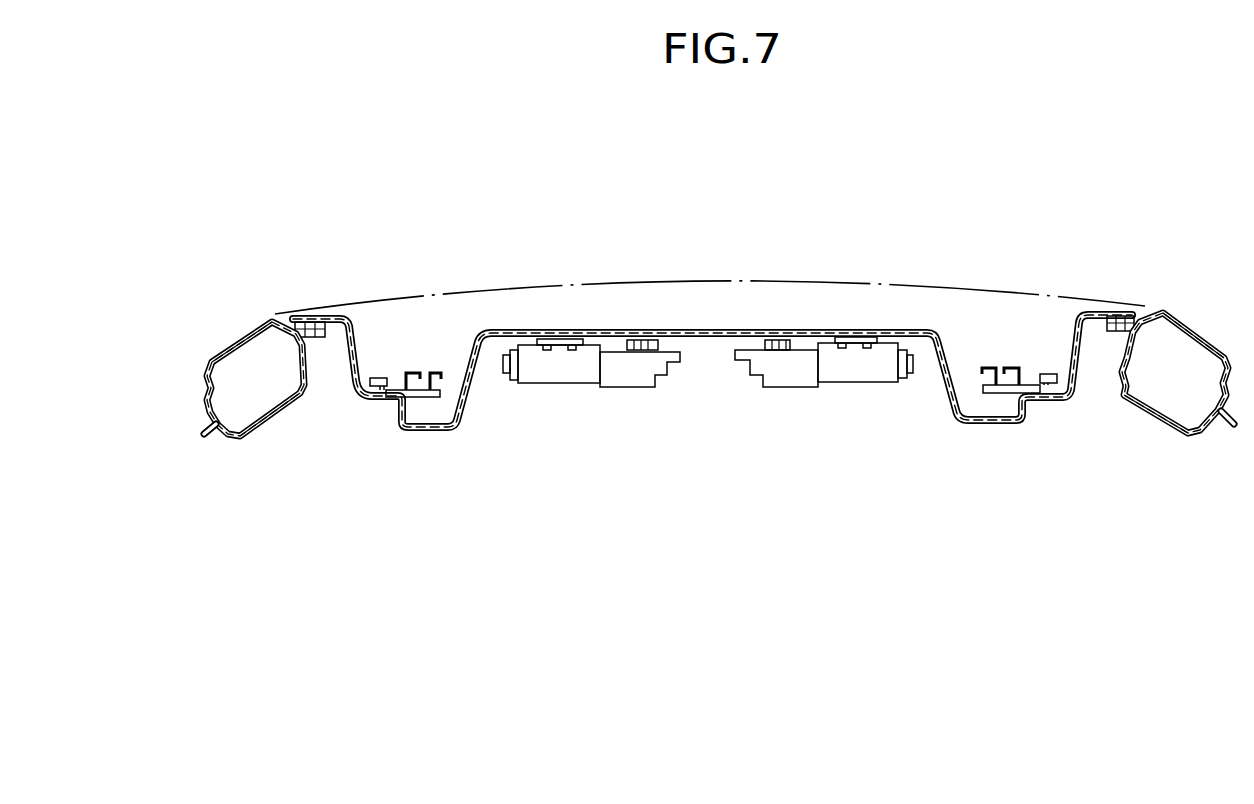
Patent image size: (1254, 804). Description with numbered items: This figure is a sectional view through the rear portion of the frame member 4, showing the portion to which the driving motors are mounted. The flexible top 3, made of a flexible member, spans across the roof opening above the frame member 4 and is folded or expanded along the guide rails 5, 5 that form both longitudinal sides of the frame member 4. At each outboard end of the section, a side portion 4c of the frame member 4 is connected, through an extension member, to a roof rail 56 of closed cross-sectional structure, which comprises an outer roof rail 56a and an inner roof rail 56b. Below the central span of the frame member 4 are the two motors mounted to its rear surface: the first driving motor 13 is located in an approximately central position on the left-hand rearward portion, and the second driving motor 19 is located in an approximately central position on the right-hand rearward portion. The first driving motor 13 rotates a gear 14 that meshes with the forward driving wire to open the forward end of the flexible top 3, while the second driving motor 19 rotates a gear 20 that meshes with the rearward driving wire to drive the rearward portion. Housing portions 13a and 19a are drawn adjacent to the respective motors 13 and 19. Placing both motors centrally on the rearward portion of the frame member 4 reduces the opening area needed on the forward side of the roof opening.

The flexible top 3 is at (720, 282).
The frame member 4 is at (963, 428).
The side portion 4c is at (327, 317).
The guide rail 5 is at (410, 370).
The first driving motor 13 is at (548, 387).
The actuator housing 13a is at (624, 390).
The gear 14 is at (652, 343).
The second driving motor 19 is at (857, 384).
The actuator housing 19a is at (782, 387).
The gear 20 is at (790, 343).
The roof side rail 56 is at (256, 436).
The outer roof rail 56a is at (233, 345).
The inner roof rail 56b is at (286, 408).